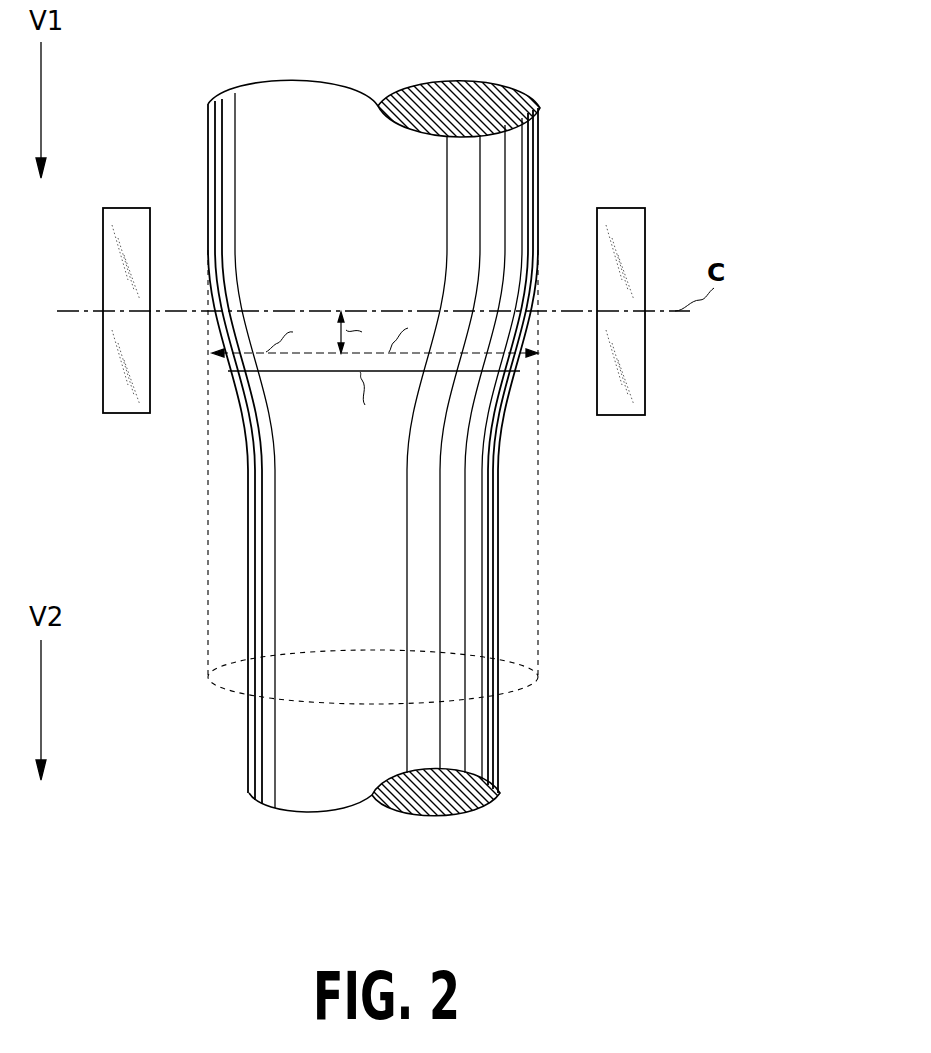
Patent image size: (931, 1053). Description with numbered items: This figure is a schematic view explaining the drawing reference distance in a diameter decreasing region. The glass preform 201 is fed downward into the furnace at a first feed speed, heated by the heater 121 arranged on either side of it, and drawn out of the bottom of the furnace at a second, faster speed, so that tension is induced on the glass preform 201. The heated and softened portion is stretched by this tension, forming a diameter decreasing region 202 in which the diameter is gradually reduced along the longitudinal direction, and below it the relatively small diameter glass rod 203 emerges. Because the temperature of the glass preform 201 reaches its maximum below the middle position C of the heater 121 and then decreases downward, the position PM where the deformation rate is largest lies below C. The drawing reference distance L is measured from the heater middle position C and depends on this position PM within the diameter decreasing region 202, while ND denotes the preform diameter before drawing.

The heater 121 is at (630, 366).
The glass preform 201 is at (536, 146).
The diameter decreasing region 202 is at (298, 414).
The glass rod 203 is at (485, 742).